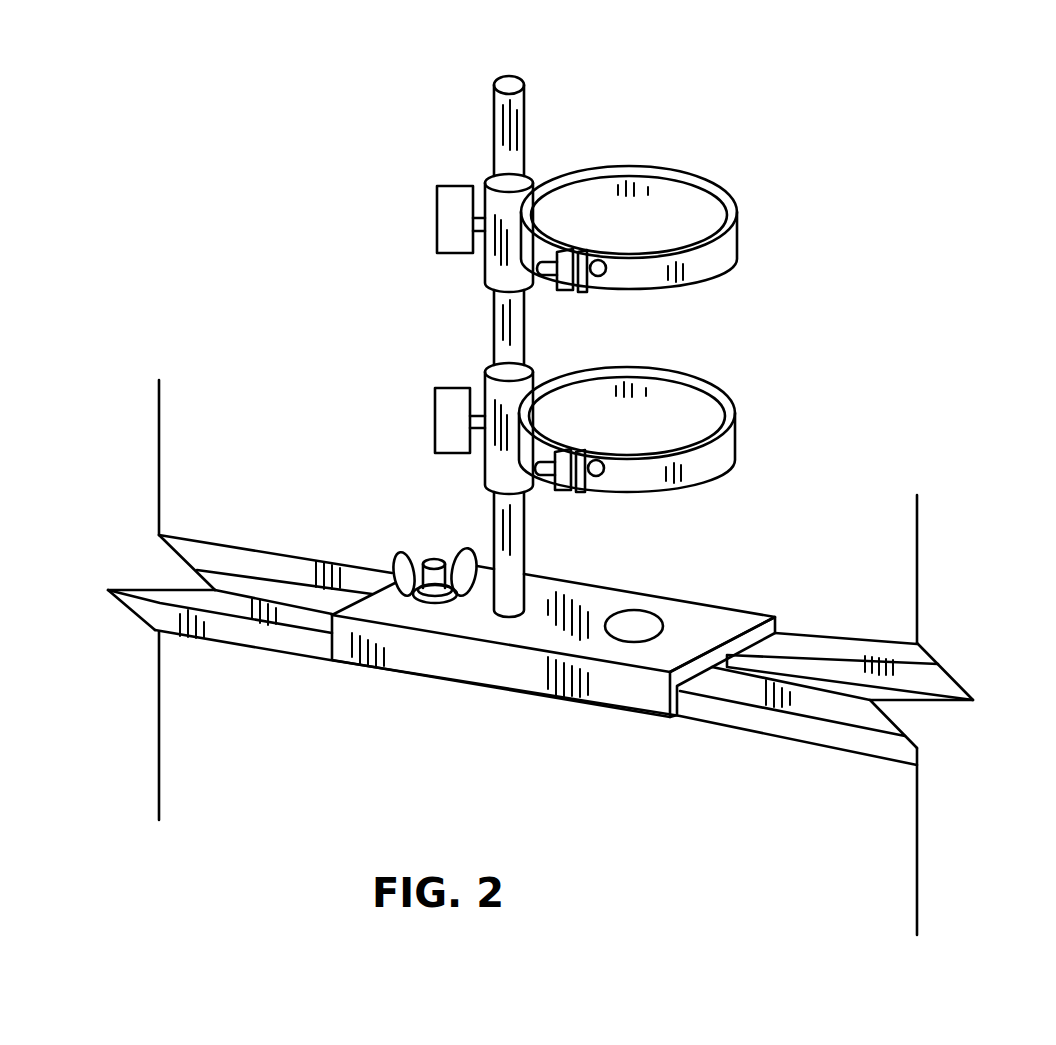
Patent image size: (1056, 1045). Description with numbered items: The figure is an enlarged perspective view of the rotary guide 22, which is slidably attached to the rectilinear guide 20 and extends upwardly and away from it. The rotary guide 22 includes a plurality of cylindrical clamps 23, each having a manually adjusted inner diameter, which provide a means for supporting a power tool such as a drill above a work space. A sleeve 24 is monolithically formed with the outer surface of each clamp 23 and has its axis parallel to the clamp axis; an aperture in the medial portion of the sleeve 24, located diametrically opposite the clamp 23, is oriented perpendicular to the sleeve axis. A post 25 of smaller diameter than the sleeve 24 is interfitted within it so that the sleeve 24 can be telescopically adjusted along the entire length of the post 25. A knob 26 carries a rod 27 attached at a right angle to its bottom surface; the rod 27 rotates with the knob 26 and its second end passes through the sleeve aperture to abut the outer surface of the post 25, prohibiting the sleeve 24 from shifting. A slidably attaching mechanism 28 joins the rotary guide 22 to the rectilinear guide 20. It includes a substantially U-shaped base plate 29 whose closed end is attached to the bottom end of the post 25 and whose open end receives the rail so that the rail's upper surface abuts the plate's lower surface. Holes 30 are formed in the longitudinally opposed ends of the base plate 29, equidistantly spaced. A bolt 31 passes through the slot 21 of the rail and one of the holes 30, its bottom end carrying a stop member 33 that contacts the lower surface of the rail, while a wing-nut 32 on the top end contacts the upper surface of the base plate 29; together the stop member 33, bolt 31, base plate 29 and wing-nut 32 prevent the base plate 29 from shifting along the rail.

The rectilinear guide 20 is at (212, 562).
The slot 21 is at (800, 668).
The rotary guide 22 is at (895, 179).
The cylindrical clamps 23 is at (657, 177).
The sleeve 24 is at (497, 203).
The post 25 is at (510, 112).
The knob 26 is at (448, 200).
The rod 27 is at (480, 232).
The slidably attaching mechanism 28 is at (720, 622).
The base plate 29 is at (620, 690).
The holes 30 is at (636, 626).
The bolt 31 is at (428, 606).
The wing-nut 32 is at (442, 612).
The stop member 33 is at (397, 556).